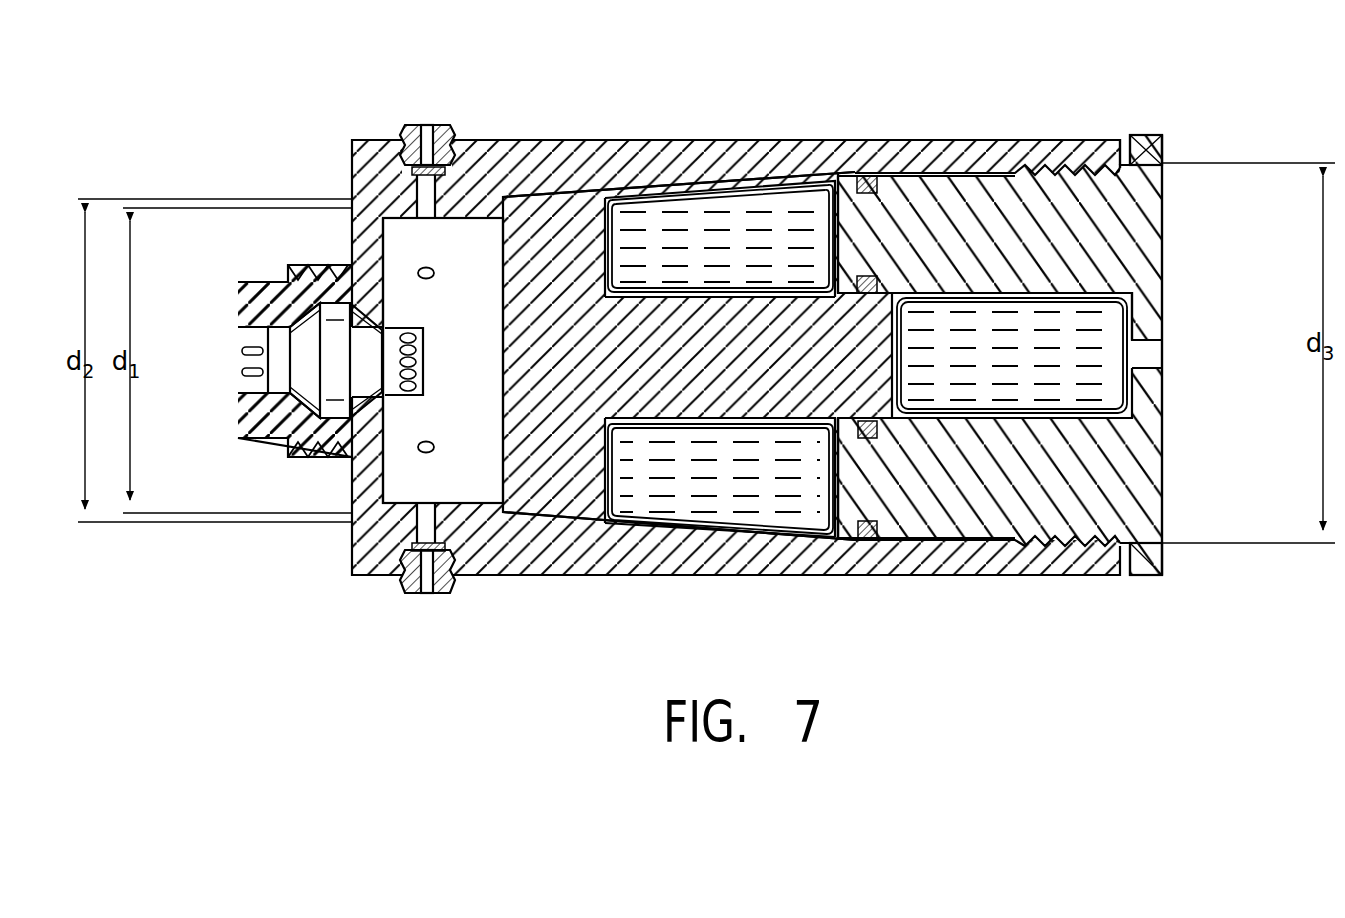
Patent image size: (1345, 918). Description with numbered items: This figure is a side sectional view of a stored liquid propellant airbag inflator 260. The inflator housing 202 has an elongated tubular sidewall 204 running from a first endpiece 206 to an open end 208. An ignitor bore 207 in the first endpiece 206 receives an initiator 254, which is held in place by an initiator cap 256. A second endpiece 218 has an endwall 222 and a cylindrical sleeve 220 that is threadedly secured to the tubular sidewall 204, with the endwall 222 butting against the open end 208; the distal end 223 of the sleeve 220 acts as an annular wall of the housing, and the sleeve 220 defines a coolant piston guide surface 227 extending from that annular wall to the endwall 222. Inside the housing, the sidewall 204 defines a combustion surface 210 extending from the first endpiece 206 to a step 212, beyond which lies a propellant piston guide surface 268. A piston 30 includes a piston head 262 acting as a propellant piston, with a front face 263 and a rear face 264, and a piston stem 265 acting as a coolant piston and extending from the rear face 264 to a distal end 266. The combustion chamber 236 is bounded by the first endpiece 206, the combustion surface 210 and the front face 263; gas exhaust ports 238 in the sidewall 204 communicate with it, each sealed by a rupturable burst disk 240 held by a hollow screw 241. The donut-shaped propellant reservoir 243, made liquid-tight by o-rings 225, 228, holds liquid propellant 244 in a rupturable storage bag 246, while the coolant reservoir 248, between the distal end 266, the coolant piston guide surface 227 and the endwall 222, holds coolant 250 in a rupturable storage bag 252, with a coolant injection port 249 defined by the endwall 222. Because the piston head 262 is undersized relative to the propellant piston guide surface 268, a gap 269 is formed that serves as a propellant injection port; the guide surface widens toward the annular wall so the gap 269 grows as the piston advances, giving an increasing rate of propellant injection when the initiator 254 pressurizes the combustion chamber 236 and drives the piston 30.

The stored liquid propellant airbag inflator 260 is at (755, 43).
The hollow screw 241 is at (405, 127).
The rupturable burst disk 240 is at (410, 171).
The gap 269 is at (553, 204).
The piston head 262 is at (585, 200).
The rear face 264 is at (610, 245).
The propellant piston guide surface 268 is at (777, 290).
The piston 30 is at (779, 290).
The distal end of sleeve 223 is at (864, 195).
The inflator housing 202 is at (992, 133).
The tubular sidewall 204 is at (1095, 138).
The open end 208 is at (1165, 152).
The second endpiece 218 is at (1166, 205).
The gas exhaust ports 238 is at (427, 218).
The front face 263 is at (503, 300).
The combustion chamber 236 is at (436, 361).
The combustion surface 210 is at (478, 503).
The initiator cap 256 is at (240, 300).
The initiator 254 is at (298, 372).
The ignitor bore 207 is at (290, 390).
The first endpiece 206 is at (352, 460).
The liquid propellant 244 is at (720, 359).
The distal end of piston stem 266 is at (880, 290).
The coolant reservoir 248 is at (1132, 298).
The coolant 250 is at (1012, 355).
The rupturable storage bag 252 is at (1112, 337).
The coolant injection port 249 is at (1162, 362).
The coolant piston guide surface 227 is at (1075, 424).
The step 212 is at (480, 513).
The rupturable storage bag 246 is at (650, 526).
The piston stem 265 is at (668, 412).
The propellant reservoir 243 is at (776, 538).
The o-ring 225 is at (873, 540).
The o-ring 228 is at (877, 440).
The sleeve 220 is at (912, 500).
The endwall 222 is at (1143, 573).